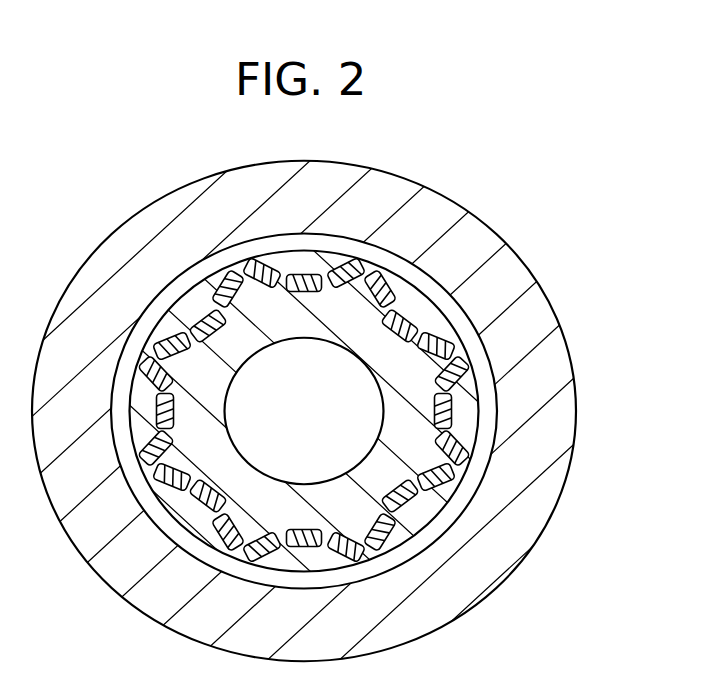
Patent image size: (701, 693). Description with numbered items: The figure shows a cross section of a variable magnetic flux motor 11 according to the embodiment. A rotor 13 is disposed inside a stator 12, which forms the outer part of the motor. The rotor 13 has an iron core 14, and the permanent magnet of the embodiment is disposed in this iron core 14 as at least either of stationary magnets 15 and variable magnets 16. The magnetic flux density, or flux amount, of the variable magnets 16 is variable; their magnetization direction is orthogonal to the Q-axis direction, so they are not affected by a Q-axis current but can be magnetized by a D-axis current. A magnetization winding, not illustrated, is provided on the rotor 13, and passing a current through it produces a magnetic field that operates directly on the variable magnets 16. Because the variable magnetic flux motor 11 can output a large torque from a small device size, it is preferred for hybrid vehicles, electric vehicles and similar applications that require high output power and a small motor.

The variable magnetic flux motor 11 is at (512, 158).
The stator 12 is at (563, 492).
The rotor 13 is at (348, 371).
The iron core 14 is at (432, 327).
The stationary magnets 15 is at (480, 342).
The variable magnets 16 is at (448, 403).